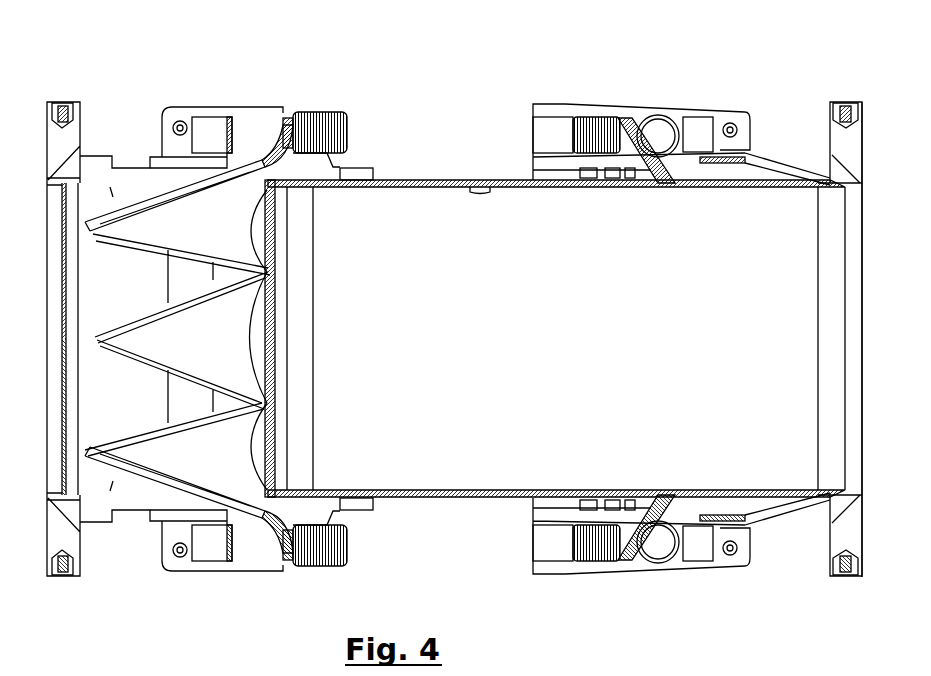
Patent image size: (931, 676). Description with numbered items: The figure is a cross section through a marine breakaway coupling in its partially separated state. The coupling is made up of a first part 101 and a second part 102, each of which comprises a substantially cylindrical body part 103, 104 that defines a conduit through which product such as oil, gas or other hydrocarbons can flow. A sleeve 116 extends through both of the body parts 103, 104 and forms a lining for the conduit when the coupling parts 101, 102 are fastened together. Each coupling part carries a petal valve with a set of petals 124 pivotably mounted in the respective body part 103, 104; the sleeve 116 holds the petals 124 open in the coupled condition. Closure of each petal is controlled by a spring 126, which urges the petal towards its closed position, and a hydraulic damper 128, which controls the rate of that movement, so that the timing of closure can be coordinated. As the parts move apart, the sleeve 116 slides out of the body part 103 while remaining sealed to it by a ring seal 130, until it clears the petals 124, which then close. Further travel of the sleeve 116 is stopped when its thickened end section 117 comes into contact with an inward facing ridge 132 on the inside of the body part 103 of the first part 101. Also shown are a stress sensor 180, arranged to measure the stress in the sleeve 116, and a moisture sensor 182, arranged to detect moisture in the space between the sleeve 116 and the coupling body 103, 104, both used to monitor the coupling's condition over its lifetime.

The first part 101 is at (181, 100).
The second part 102 is at (690, 103).
The body part 103 is at (118, 100).
The body part 104 is at (785, 160).
The sleeve 116 is at (435, 130).
The thickened end section 117 is at (357, 196).
The petals 124 is at (135, 100).
The spring 126 is at (330, 118).
The hydraulic damper 128 is at (238, 100).
The ring seal 130 is at (368, 140).
The inward facing ridge 132 is at (380, 471).
The stress sensor 180 is at (482, 175).
The moisture sensor 182 is at (90, 100).